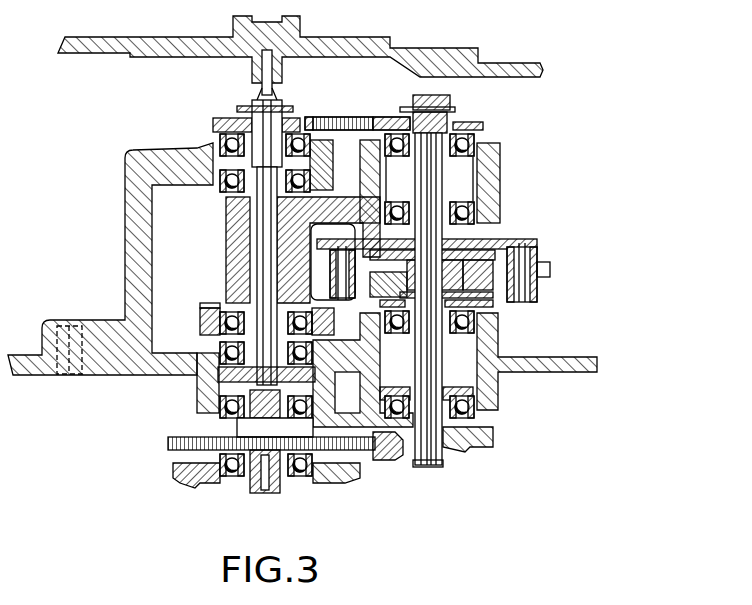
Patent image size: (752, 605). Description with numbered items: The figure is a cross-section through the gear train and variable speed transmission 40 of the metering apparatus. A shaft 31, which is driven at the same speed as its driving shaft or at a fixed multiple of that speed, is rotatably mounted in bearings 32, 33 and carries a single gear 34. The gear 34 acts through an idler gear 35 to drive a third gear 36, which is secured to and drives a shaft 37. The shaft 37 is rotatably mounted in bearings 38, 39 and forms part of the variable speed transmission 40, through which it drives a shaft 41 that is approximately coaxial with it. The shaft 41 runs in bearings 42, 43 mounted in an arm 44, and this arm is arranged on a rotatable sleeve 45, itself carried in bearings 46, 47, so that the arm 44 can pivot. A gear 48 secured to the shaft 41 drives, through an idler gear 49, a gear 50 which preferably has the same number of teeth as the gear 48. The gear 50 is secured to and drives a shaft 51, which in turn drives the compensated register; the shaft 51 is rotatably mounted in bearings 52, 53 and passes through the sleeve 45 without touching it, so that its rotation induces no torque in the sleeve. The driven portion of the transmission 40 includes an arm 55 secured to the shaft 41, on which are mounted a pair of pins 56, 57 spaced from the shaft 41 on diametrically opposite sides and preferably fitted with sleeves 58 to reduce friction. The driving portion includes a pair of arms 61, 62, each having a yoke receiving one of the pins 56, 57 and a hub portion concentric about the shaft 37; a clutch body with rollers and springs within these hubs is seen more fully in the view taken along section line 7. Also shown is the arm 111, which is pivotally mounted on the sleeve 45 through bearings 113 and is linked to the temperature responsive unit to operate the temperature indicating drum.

The shaft 31 is at (286, 492).
The bearing 32 is at (242, 487).
The bearing 33 is at (222, 423).
The gear 34 is at (172, 450).
The idler gear 35 is at (365, 455).
The third gear 36 is at (478, 450).
The shaft 37 is at (428, 470).
The bearing 38 is at (478, 417).
The bearing 39 is at (480, 350).
The variable speed transmission 40 is at (568, 183).
The shaft 41 is at (445, 190).
The bearing 42 is at (500, 207).
The bearing 43 is at (482, 133).
The arm 44 is at (500, 162).
The rotatable sleeve 45 is at (252, 243).
The bearing 46 is at (222, 348).
The bearing 47 is at (226, 196).
The gear 48 is at (465, 108).
The idler gear 49 is at (378, 90).
The gear 50 is at (296, 106).
The shaft 51 is at (283, 73).
The bearing 52 is at (213, 133).
The bearing 53 is at (200, 394).
The arm 55 is at (500, 243).
The pin 56 is at (520, 302).
The pin 57 is at (342, 248).
The sleeve 58 is at (538, 253).
The arm 61 is at (551, 275).
The arm 62 is at (358, 302).
The section line 7- 7 is at (225, 257).
The arm 111 is at (198, 312).
The bearing 113 is at (200, 322).